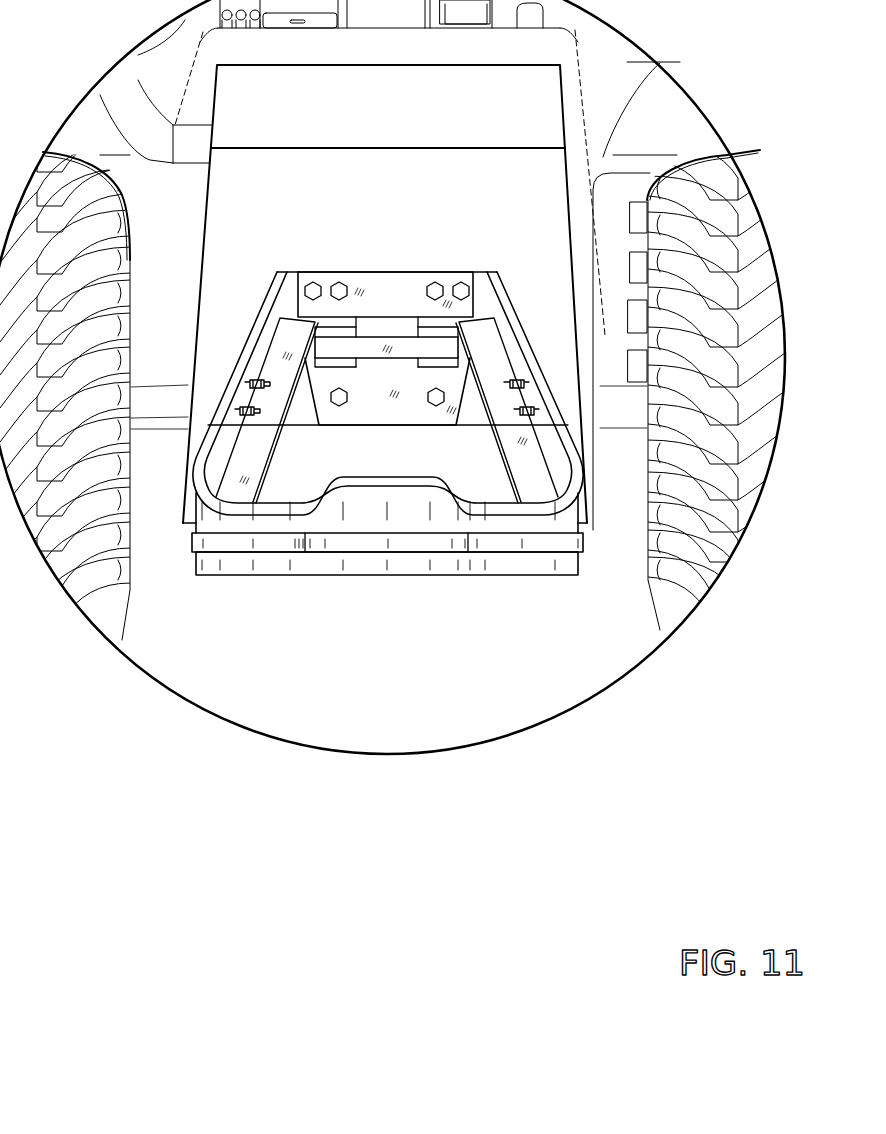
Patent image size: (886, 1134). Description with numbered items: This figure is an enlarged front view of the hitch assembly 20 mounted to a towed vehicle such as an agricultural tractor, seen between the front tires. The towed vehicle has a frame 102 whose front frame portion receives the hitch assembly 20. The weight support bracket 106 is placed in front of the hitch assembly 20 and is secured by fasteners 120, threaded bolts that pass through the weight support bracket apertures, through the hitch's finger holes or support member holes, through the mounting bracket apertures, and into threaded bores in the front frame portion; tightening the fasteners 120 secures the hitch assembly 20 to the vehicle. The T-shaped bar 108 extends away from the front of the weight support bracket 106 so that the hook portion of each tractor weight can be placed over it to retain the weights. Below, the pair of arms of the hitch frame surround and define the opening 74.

The hitch assembly 20 is at (372, 575).
The opening 74 is at (406, 469).
The frame 102 is at (420, 194).
The weight support bracket 106 is at (380, 292).
The T-shaped bar 108 is at (365, 345).
The fasteners 120 is at (460, 288).